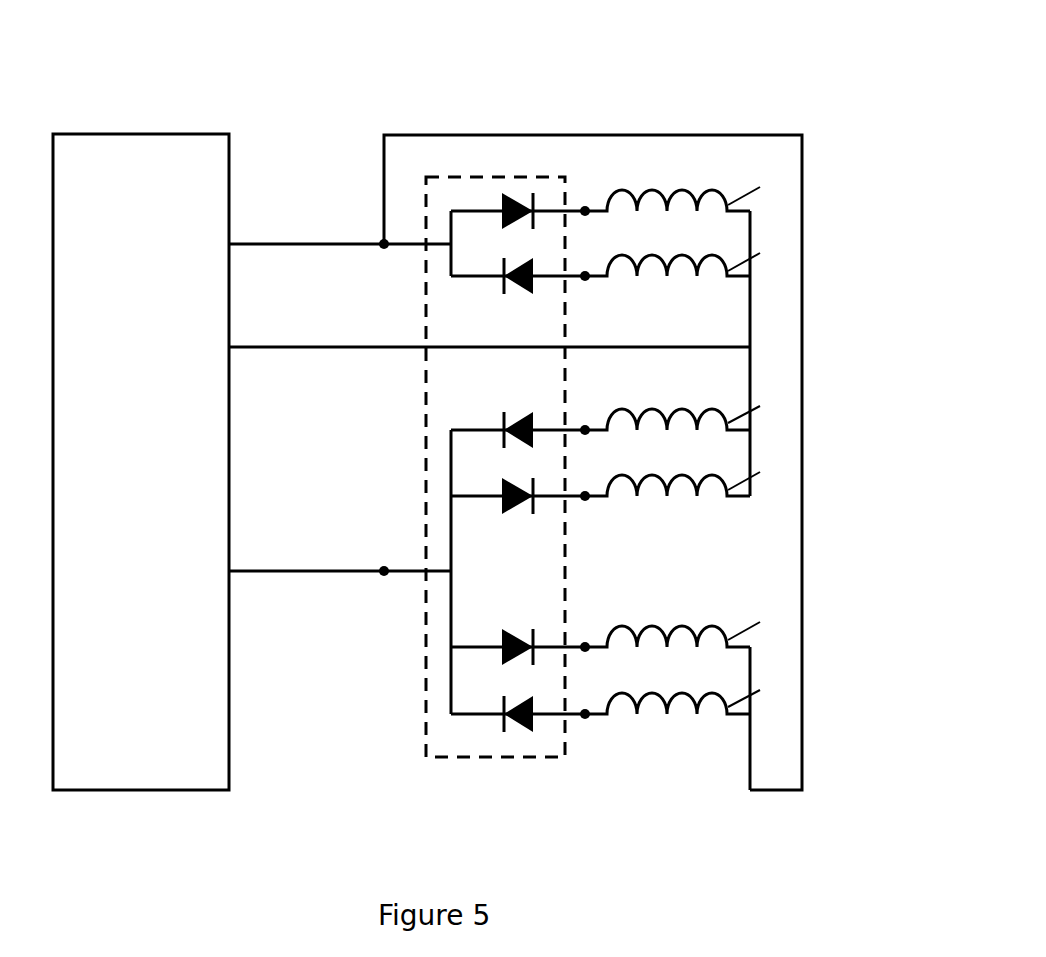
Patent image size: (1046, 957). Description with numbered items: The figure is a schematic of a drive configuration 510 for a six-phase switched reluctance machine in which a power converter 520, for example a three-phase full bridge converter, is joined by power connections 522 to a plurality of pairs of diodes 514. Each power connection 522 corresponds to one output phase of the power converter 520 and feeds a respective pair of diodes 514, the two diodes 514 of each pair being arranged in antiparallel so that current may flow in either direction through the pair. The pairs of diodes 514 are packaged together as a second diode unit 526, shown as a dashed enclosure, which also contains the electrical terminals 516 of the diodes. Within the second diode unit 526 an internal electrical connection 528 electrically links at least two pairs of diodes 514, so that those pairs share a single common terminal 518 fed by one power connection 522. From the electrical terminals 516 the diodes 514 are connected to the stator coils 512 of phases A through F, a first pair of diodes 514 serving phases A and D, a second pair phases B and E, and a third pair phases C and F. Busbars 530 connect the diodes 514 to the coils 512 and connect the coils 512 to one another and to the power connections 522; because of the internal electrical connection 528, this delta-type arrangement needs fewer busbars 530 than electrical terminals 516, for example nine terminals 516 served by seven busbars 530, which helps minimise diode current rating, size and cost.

The drive configuration 510 is at (771, 91).
The coils 512 is at (659, 189).
The diodes 514 is at (506, 200).
The electrical terminals 516 is at (382, 246).
The common terminal 518 is at (383, 243).
The power converter 520 is at (124, 471).
The power connections 522 is at (264, 241).
The second diode unit 526 is at (432, 759).
The internal electrical connection 528 is at (450, 532).
The busbars 530 is at (602, 213).